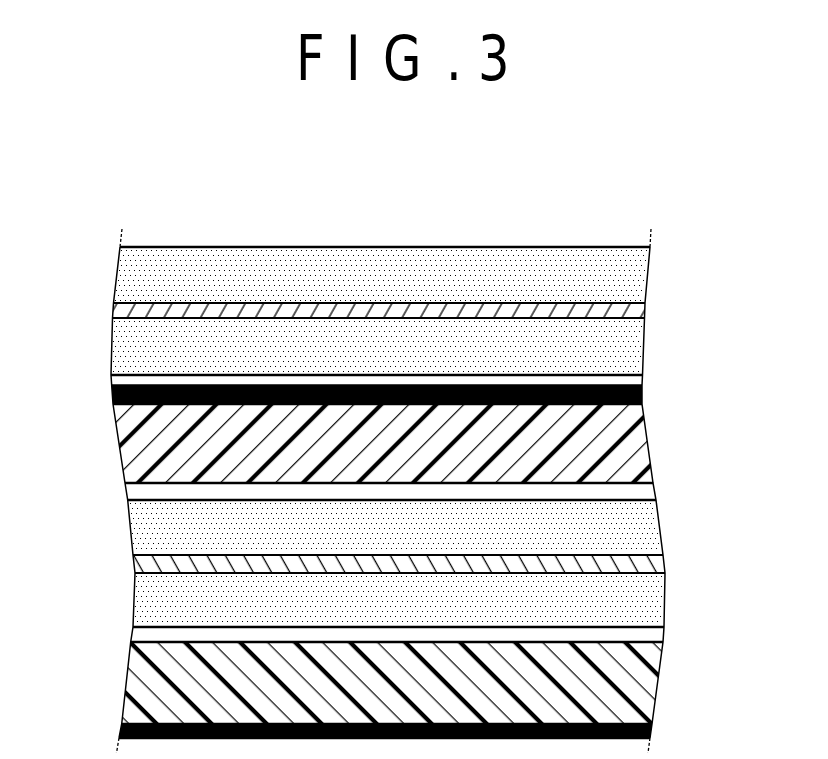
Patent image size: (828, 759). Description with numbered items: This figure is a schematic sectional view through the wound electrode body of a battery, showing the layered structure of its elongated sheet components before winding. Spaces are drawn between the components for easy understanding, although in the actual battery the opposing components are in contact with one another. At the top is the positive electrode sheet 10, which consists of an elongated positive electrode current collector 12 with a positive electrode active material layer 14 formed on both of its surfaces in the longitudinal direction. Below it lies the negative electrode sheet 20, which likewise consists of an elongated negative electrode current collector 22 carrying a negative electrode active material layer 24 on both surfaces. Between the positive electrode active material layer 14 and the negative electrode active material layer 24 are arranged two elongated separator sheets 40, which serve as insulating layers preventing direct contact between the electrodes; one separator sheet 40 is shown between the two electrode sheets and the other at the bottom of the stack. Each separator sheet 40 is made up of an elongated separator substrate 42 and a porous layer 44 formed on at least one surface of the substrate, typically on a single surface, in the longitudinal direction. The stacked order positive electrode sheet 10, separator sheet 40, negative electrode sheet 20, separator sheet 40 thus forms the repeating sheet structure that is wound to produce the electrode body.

The positive electrode sheet 10 is at (98, 247).
The positive electrode current collector 12 is at (640, 310).
The positive electrode active material layer 14 is at (640, 275).
The negative electrode sheet 20 is at (98, 503).
The negative electrode current collector 22 is at (660, 560).
The negative electrode active material layer 24 is at (647, 518).
The separator sheet 40 is at (98, 388).
The separator substrate 42 is at (643, 460).
The porous layer 44 is at (641, 398).